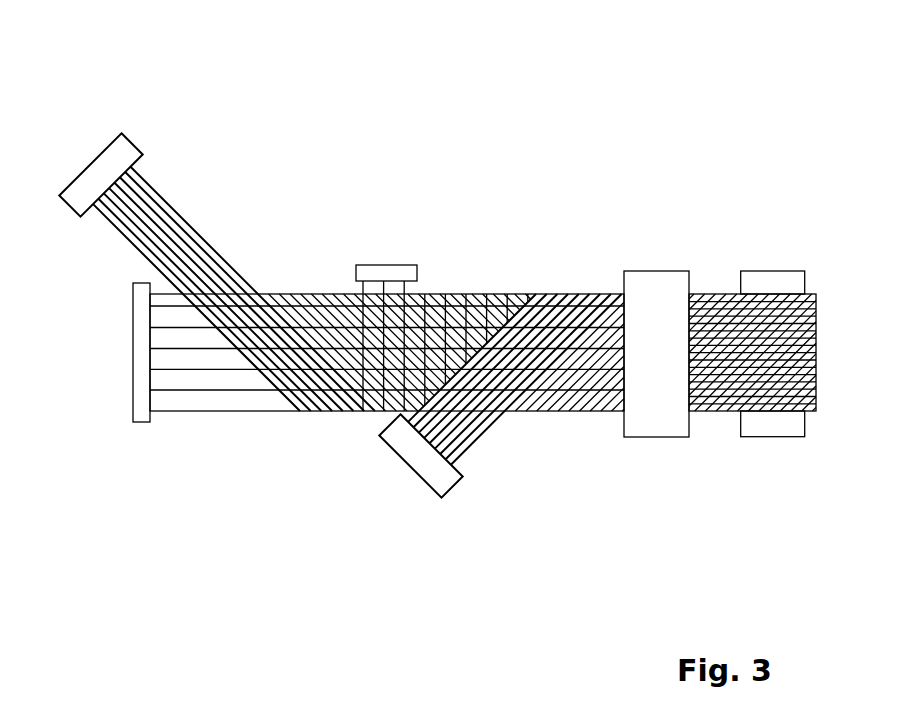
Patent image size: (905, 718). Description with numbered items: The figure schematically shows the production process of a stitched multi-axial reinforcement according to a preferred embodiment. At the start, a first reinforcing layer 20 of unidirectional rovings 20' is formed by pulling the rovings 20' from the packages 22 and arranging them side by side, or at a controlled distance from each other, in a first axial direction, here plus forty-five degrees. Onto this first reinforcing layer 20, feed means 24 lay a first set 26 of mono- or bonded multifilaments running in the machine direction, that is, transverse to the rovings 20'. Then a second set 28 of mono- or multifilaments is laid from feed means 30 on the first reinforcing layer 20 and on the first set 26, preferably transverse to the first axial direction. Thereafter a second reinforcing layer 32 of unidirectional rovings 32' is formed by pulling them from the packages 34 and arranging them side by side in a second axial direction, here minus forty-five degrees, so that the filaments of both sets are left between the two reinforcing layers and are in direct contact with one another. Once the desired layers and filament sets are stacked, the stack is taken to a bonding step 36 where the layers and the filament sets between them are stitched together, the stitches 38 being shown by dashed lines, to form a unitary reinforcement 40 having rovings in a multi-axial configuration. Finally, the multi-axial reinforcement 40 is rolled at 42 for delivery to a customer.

The first reinforcing layer 20 is at (234, 230).
The unidirectional rovings of the first reinforcing layer 20' is at (219, 162).
The packages 22 is at (102, 177).
The feed means 24 is at (140, 385).
The first set of mono- or bonded multifilaments 26 is at (227, 365).
The second set of mono- or multifilaments 28 is at (393, 287).
The feed means 30 is at (388, 275).
The second reinforcing layer 32 is at (514, 424).
The unidirectional rovings of the second reinforcing layer 32' is at (534, 483).
The packages 34 is at (420, 453).
The bonding step 36 is at (663, 312).
The stitches 38 is at (706, 370).
The unitary reinforcement 40 is at (728, 348).
The rolling station 42 is at (778, 285).